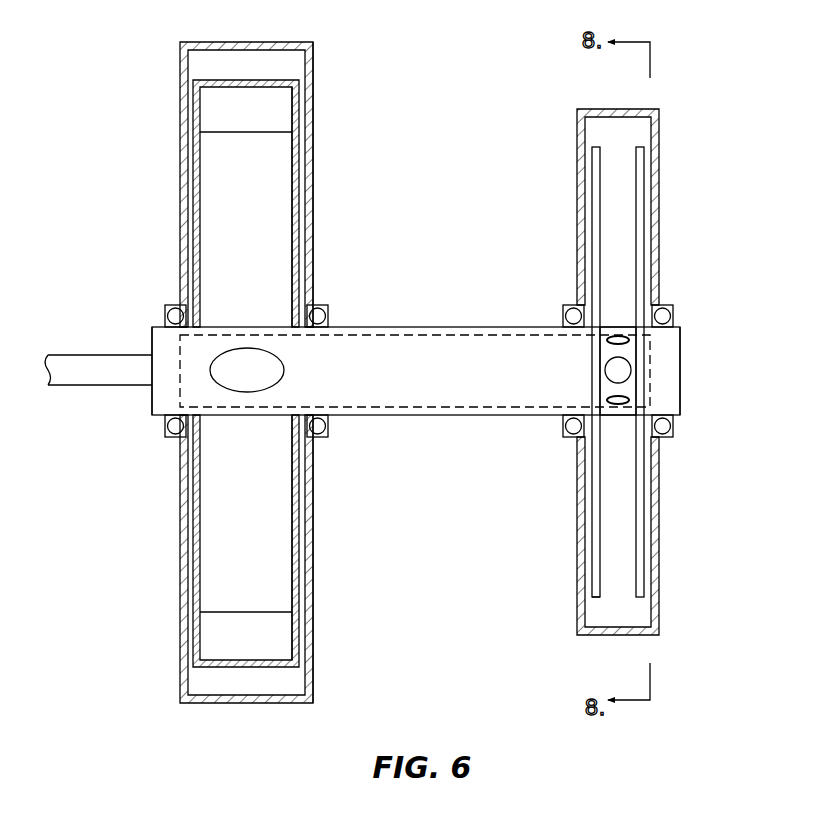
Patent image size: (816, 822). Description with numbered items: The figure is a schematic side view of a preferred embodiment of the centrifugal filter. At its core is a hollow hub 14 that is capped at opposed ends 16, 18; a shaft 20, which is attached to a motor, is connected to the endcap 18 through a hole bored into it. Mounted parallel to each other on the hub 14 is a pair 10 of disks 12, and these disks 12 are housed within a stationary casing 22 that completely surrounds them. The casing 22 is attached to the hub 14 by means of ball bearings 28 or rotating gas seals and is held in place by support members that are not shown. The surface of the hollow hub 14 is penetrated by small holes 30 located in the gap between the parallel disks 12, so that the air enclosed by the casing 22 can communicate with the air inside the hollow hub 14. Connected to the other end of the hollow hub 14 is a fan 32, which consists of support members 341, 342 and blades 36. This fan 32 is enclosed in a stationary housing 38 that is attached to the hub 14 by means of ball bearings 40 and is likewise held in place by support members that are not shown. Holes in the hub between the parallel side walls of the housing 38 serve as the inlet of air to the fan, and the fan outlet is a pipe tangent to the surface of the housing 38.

The pair of disks 10 is at (595, 601).
The disks 12 is at (594, 554).
The hub 14 is at (431, 417).
The end 16 is at (690, 387).
The endcap 18 is at (151, 398).
The shaft 20 is at (88, 358).
The casing 22 is at (591, 109).
The ball bearings 28 is at (563, 307).
The small holes 30 is at (606, 347).
The fan 32 is at (226, 64).
The support member 341 is at (202, 207).
The support member 342 is at (293, 526).
The blades 36 is at (247, 126).
The housing 38 is at (313, 42).
The ball bearings 40 is at (165, 307).